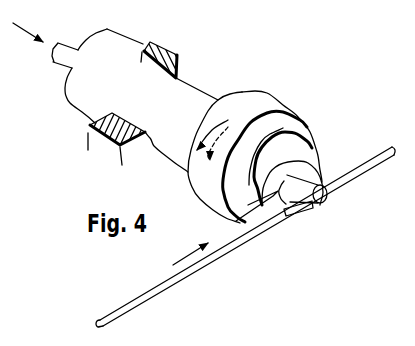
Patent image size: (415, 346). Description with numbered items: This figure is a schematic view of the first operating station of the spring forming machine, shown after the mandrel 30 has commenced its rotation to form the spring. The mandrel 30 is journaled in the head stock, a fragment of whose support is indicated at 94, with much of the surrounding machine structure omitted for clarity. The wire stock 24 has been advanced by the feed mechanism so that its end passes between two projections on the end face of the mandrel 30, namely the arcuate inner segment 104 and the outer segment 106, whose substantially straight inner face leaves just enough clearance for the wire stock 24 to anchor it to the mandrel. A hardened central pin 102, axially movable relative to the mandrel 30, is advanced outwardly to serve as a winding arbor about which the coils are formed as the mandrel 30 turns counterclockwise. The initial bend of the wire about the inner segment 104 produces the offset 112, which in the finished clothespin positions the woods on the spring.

The wire stock 24 is at (185, 271).
The mandrel 30 is at (315, 157).
The head stock support fragment 94 is at (184, 57).
The central pin 102 is at (68, 43).
The inner segment 104 is at (290, 204).
The outer segment 106 is at (305, 213).
The offset 112 is at (236, 222).